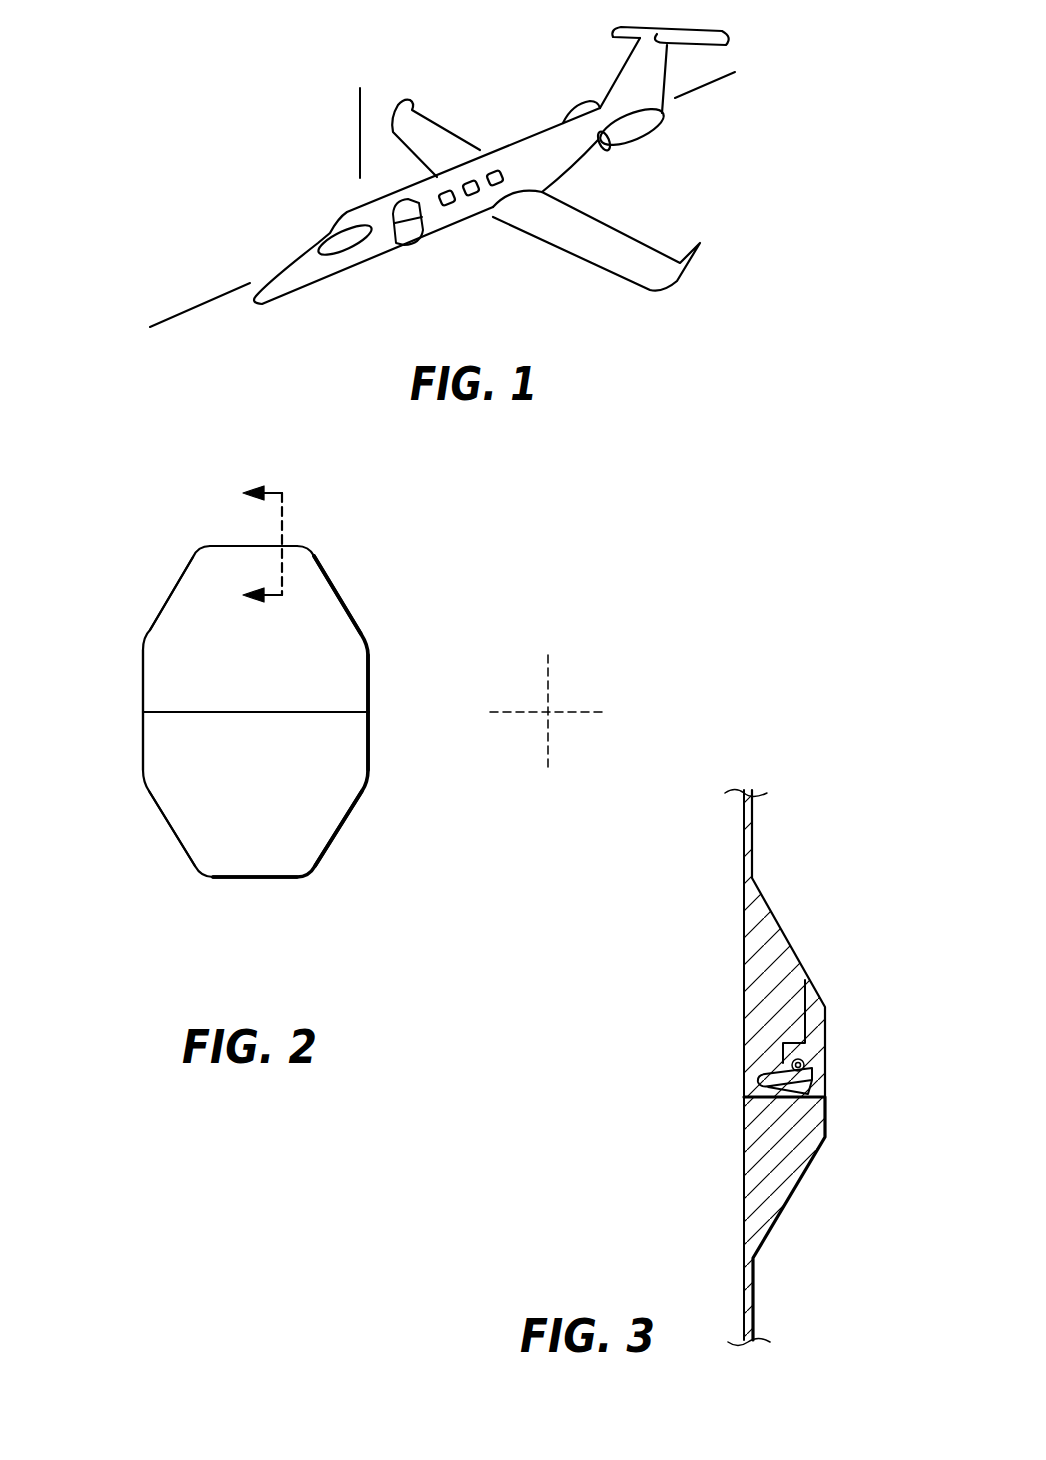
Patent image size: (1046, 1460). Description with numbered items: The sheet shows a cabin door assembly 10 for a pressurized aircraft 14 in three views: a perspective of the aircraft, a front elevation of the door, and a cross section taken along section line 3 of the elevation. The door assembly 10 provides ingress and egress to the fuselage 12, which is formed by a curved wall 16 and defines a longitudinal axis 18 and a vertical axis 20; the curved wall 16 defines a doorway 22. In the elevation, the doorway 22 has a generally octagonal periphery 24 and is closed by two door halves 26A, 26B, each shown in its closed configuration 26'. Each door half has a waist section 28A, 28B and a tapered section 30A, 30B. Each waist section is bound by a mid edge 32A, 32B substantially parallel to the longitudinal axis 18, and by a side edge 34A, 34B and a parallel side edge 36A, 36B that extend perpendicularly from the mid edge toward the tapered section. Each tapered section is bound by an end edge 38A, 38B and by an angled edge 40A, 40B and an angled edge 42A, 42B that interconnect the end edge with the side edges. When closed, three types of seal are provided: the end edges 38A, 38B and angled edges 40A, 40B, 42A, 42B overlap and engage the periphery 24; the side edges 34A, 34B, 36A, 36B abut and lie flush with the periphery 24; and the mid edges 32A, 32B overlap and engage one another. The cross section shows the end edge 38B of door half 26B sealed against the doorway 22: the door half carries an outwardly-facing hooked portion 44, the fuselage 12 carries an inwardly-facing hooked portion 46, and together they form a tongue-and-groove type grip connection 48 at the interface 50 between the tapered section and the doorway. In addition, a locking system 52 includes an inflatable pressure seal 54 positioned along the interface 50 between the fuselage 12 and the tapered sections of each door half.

In FIG. 1, the cabin door assembly 10 is at (393, 244).
In FIG. 2, the cabin door assembly 10 is at (285, 867).
In FIG. 3, the cabin door assembly 10 is at (745, 1223).
In FIG. 1, the fuselage 12 is at (315, 272).
In FIG. 2, the fuselage 12 is at (205, 932).
In FIG. 3, the fuselage 12 is at (747, 1041).
In FIG. 1, the aircraft 14 is at (502, 152).
In FIG. 1, the curved wall 16 is at (483, 222).
In FIG. 1, the longitudinal axis 18 is at (185, 310).
In FIG. 2, the longitudinal axis 18 is at (585, 712).
In FIG. 1, the vertical axis 20 is at (360, 117).
In FIG. 2, the vertical axis 20 is at (548, 672).
In FIG. 1, the doorway 22 is at (413, 233).
In FIG. 2, the doorway 22 is at (155, 827).
In FIG. 3, the doorway 22 is at (787, 1020).
In FIG. 2, the periphery 24 is at (255, 828).
In FIG. 3, the periphery 24 is at (752, 1071).
In FIG. 2, the door half 26A is at (290, 776).
In FIG. 2, the door half 26B is at (290, 691).
In FIG. 3, the door half 26B is at (745, 1197).
In FIG. 2, the closed configuration 26' is at (359, 713).
In FIG. 2, the waist section 28A is at (350, 727).
In FIG. 2, the waist section 28B is at (350, 697).
In FIG. 2, the tapered section 30A is at (317, 835).
In FIG. 2, the tapered section 30B is at (333, 546).
In FIG. 2, the mid edge 32A is at (212, 712).
In FIG. 2, the mid edge 32B is at (177, 710).
In FIG. 2, the side edge 34A is at (368, 777).
In FIG. 2, the side edge 34B is at (368, 663).
In FIG. 2, the side edge 36A is at (143, 752).
In FIG. 2, the side edge 36B is at (143, 670).
In FIG. 2, the end edge 38A is at (287, 877).
In FIG. 2, the end edge 38B is at (227, 546).
In FIG. 3, the end edge 38B is at (802, 1150).
In FIG. 2, the angled edge 40A is at (348, 815).
In FIG. 2, the angled edge 40B is at (350, 606).
In FIG. 2, the angled edge 42A is at (158, 808).
In FIG. 2, the angled edge 42B is at (174, 589).
In FIG. 2, the section line 3- 3 is at (262, 542).
In FIG. 3, the hooked portion 44 is at (832, 1092).
In FIG. 3, the hooked portion 46 is at (757, 1091).
In FIG. 3, the tongue-and-groove type grip connection 48 is at (836, 1095).
In FIG. 3, the interface 50 is at (823, 1063).
In FIG. 3, the locking system 52 is at (825, 1007).
In FIG. 3, the inflatable pressure seal 54 is at (825, 1047).